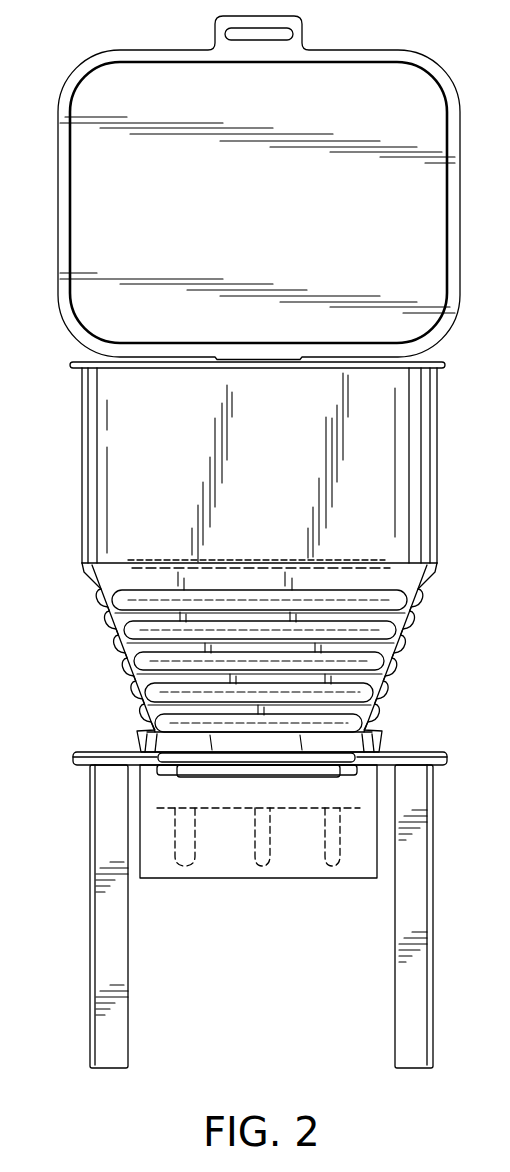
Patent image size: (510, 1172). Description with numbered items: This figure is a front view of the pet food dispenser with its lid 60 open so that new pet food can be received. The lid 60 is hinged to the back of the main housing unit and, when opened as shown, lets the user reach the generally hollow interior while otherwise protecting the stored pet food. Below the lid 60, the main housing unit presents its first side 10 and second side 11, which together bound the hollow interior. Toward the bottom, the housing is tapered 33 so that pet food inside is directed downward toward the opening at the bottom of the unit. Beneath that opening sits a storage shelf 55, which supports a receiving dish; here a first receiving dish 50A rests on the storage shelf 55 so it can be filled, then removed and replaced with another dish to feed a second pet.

The lid 60 is at (405, 96).
The first side 10 is at (437, 463).
The second side 11 is at (82, 462).
The tapered bottom 33 is at (395, 642).
The storage shelf 55 is at (170, 880).
The first receiving dish 50A is at (293, 850).